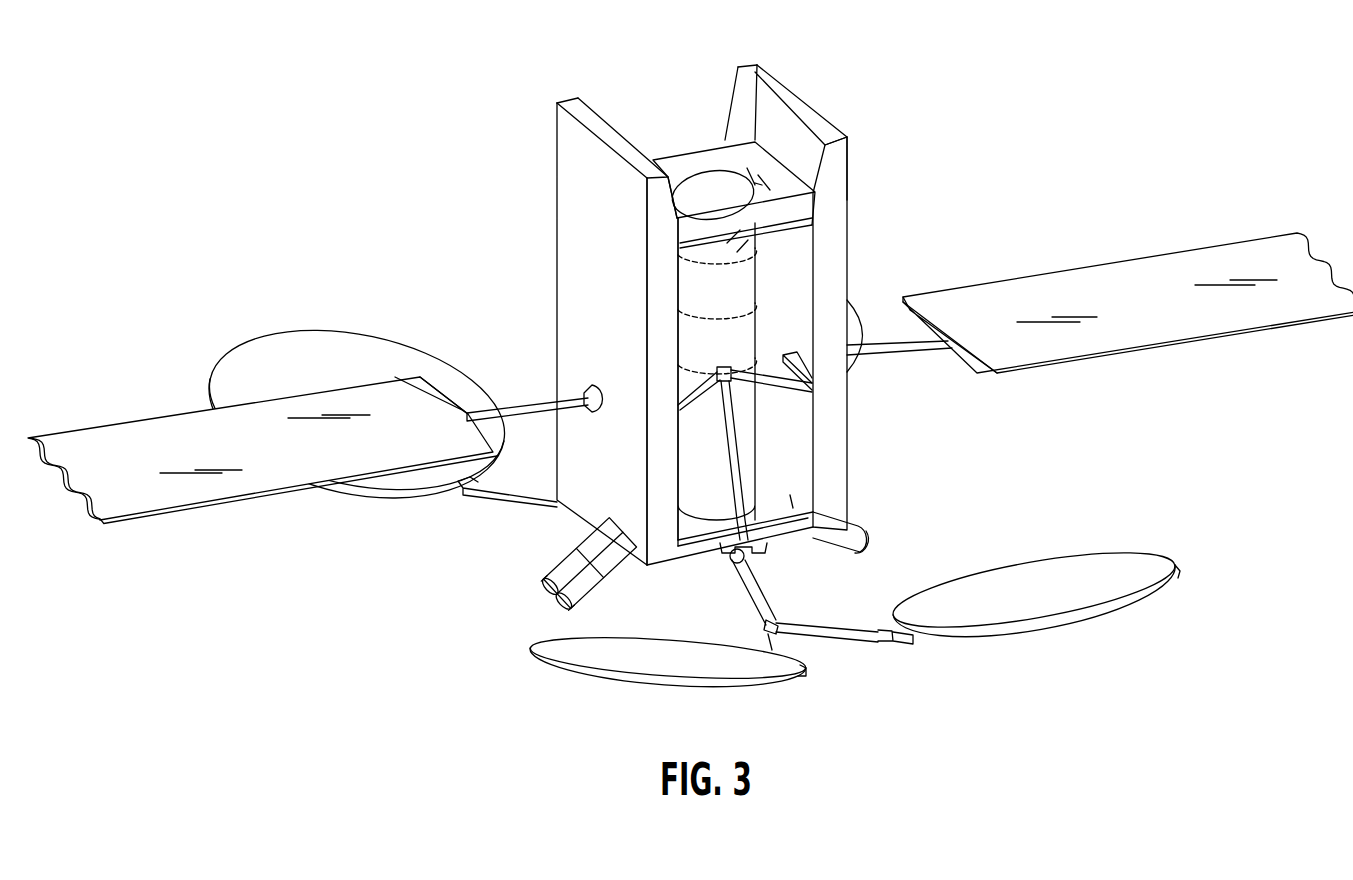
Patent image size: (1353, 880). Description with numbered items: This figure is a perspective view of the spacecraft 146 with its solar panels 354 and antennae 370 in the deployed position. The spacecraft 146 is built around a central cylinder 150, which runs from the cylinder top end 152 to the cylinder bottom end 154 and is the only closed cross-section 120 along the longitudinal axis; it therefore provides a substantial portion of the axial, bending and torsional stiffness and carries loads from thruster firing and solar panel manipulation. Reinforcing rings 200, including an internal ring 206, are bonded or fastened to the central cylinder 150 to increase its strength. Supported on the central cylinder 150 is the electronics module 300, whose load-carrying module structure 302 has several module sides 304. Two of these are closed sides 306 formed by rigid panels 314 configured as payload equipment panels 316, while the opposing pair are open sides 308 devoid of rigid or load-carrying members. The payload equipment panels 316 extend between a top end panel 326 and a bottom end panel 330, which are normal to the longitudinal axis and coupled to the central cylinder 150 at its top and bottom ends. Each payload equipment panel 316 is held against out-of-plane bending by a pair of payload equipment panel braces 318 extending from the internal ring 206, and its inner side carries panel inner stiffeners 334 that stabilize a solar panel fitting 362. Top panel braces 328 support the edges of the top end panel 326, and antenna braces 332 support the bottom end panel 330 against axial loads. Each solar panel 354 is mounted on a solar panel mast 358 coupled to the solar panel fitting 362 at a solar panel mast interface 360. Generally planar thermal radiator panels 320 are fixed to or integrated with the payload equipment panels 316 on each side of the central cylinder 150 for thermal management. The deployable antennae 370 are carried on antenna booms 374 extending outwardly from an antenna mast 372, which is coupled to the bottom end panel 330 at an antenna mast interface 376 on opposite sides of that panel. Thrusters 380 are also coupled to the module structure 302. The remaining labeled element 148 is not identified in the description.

The closed cross-section 120 is at (725, 278).
The spacecraft 146 is at (570, 97).
The panel inner face 148 is at (693, 487).
The central cylinder 150 is at (703, 462).
The cylinder top end 152 is at (796, 185).
The cylinder bottom end 154 is at (794, 538).
The reinforcing rings 200 is at (690, 379).
The internal ring 206 is at (718, 366).
The electronics module 300 is at (691, 295).
The module structure 302 is at (750, 66).
The module sides 304 is at (827, 265).
The closed sides 306 is at (817, 118).
The open sides 308 is at (668, 82).
The rigid panels 314 is at (822, 116).
The payload equipment panels 316 is at (560, 102).
The payload equipment panel braces 318 is at (790, 390).
The thermal radiator panels 320 is at (558, 292).
The top end panel 326 is at (773, 182).
The top panel braces 328 is at (810, 217).
The bottom end panel 330 is at (793, 503).
The antenna braces 332 is at (738, 472).
The panel inner stiffeners 334 is at (797, 358).
The solar panels 354 is at (178, 413).
The solar panel mast 358 is at (913, 348).
The solar panel mast interface 360 is at (586, 395).
The solar panel fitting 362 is at (594, 384).
The antennae 370 is at (312, 325).
The antenna mast 372 is at (750, 583).
The antenna boom 374 is at (773, 627).
The antenna mast interface 376 is at (752, 556).
The thrusters 380 is at (613, 567).